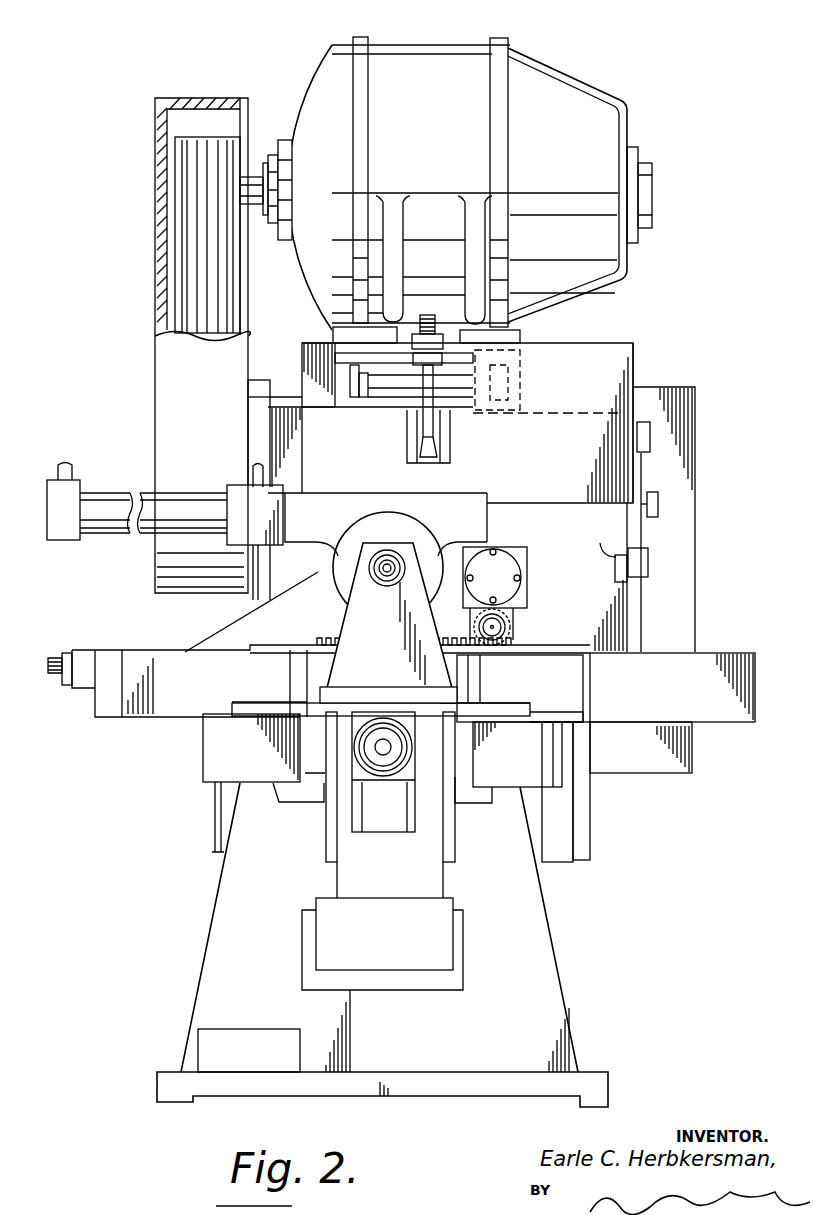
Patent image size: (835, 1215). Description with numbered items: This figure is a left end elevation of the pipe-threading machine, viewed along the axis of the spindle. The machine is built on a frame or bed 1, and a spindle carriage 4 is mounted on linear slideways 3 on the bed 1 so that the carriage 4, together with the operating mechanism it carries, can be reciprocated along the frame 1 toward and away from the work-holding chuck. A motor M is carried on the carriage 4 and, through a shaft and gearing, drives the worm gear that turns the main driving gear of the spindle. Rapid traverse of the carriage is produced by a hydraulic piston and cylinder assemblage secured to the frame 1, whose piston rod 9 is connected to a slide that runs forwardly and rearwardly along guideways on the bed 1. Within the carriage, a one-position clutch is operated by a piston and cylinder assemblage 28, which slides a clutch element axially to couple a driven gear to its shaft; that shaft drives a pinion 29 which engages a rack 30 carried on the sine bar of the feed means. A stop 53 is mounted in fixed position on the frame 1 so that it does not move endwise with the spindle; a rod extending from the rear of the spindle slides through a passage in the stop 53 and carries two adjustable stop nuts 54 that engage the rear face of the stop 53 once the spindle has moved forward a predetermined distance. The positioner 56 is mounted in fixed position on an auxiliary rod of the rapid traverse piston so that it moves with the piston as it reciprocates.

The motor M is at (630, 117).
The frame or bed 1 is at (560, 965).
The linear slideways 3 is at (388, 503).
The spindle carriage 4 is at (612, 535).
The piston rod 9 is at (493, 518).
The piston and cylinder assemblage 28 is at (518, 563).
The pinion 29 is at (510, 623).
The rack 30 is at (317, 637).
The stop 53 is at (410, 560).
The adjustable stop nuts 54 is at (373, 552).
The positioner 56 is at (382, 705).